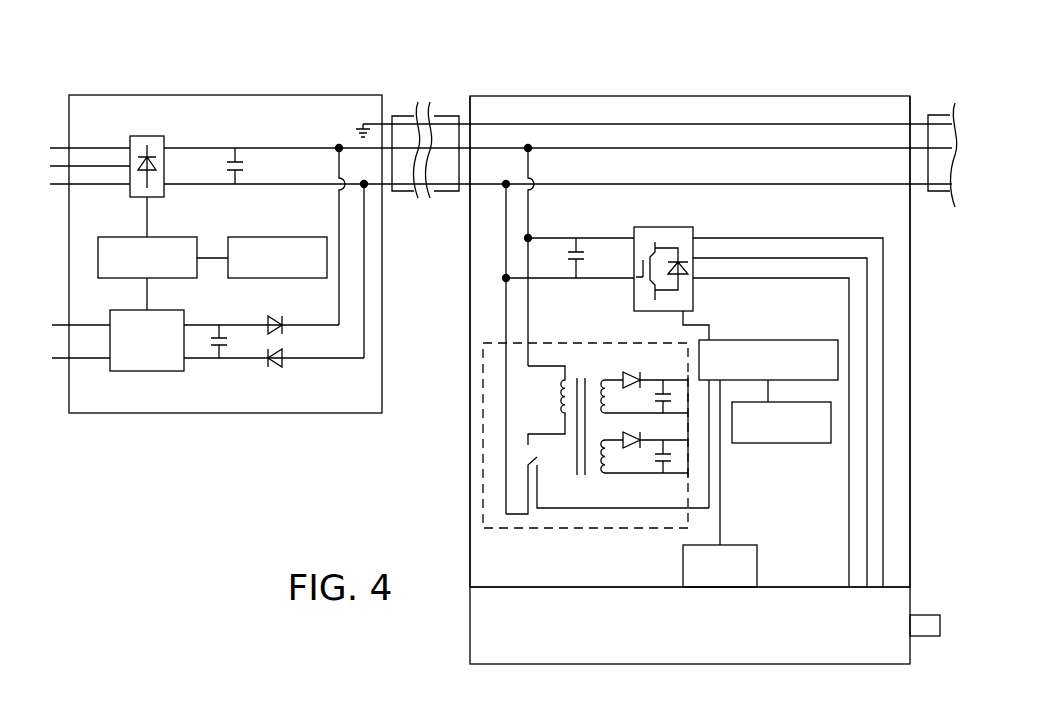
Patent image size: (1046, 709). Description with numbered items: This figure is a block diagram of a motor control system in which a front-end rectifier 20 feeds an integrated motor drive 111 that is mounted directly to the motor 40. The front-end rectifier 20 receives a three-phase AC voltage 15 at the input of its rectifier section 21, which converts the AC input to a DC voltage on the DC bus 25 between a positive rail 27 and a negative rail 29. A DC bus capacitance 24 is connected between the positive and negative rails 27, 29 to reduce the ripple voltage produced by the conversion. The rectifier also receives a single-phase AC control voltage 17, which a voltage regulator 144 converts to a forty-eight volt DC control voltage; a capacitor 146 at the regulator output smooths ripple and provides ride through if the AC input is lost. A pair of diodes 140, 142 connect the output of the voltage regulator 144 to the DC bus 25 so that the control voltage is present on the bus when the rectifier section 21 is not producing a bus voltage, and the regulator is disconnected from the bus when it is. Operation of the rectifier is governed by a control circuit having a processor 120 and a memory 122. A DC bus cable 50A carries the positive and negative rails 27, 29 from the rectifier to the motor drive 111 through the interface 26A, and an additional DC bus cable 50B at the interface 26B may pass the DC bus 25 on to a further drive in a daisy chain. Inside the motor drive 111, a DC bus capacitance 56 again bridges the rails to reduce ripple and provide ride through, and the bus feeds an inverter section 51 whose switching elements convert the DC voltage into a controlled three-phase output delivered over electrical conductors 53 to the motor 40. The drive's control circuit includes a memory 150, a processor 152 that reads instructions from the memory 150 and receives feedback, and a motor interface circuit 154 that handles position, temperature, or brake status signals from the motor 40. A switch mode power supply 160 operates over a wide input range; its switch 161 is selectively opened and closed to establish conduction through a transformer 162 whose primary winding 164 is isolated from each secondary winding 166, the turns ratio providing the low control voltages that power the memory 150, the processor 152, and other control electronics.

The three-phase AC voltage 15 is at (60, 146).
The control voltage 17 is at (58, 323).
The front-end rectifier 20 is at (183, 93).
The rectifier section 21 is at (145, 136).
The DC bus capacitance 24 is at (252, 174).
The DC bus 25 is at (178, 198).
The charging station interface 26A is at (464, 102).
The vehicle interface 26B is at (905, 80).
The positive rail 27 is at (176, 147).
The negative rail 29 is at (171, 184).
The motor 40 is at (705, 625).
The DC bus cable 50A is at (441, 115).
The additional DC bus cable 50B is at (936, 114).
The inverter section 51 is at (664, 227).
The electrical conductor 53 is at (705, 222).
The DC bus capacitance 56 is at (590, 266).
The motor drive 111 is at (554, 95).
The processor 120 is at (168, 278).
The memory 122 is at (268, 278).
The diode 140 is at (290, 336).
The diode 142 is at (284, 372).
The voltage regulator 144 is at (135, 372).
The capacitor 146 is at (206, 348).
The memory 150 is at (735, 340).
The processor 152 is at (752, 443).
The motor interface circuit 154 is at (720, 566).
The switch mode power supply 160 is at (656, 528).
The switch 161 is at (523, 460).
The transformer 162 is at (579, 488).
The primary winding 164 is at (558, 380).
The secondary winding 166 is at (617, 387).